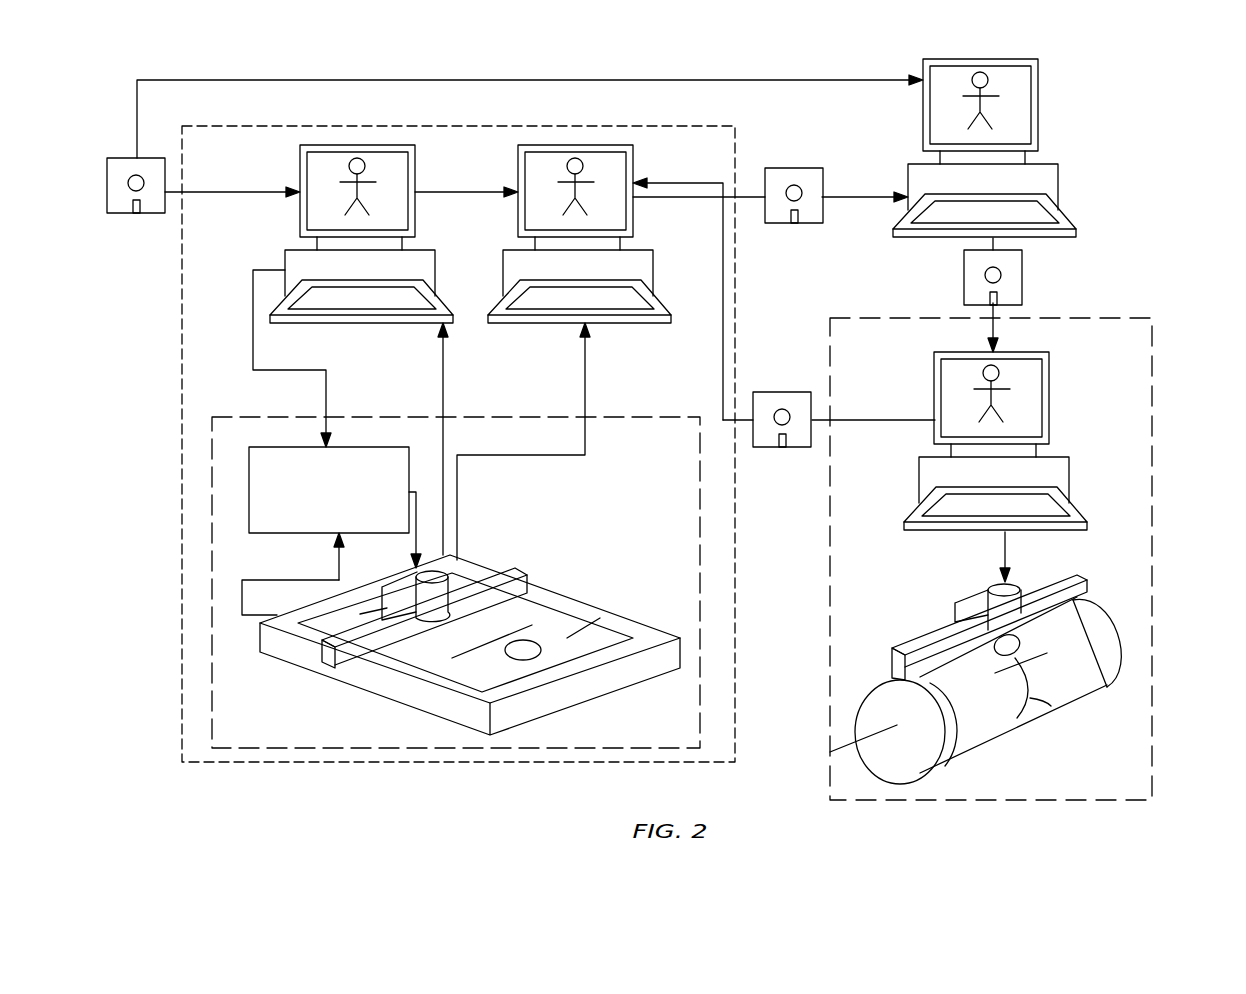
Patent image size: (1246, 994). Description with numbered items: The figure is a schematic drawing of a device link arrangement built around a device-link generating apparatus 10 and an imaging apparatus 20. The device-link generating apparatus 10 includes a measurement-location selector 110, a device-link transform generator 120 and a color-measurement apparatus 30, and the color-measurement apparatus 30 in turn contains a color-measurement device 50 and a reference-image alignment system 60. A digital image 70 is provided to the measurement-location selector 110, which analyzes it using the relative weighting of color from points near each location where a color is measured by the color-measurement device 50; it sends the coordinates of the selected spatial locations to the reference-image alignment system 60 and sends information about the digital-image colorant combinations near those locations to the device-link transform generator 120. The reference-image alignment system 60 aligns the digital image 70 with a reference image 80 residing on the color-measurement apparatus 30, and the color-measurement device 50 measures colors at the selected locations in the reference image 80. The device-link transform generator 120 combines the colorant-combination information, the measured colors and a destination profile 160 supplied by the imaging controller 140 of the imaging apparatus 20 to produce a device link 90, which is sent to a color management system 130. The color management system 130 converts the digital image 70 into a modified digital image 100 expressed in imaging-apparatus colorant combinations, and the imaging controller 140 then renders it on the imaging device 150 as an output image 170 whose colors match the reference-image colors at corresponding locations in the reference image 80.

The device-link generating apparatus 10 is at (700, 126).
The imaging apparatus 20 is at (1152, 548).
The color-measurement apparatus 30 is at (360, 750).
The color-measurement device 50 is at (413, 572).
The reference-image alignment system 60 is at (249, 485).
The digital image 70 is at (118, 213).
The reference image 80 is at (598, 618).
The device link 90 is at (800, 223).
The modified digital image 100 is at (1023, 275).
The measurement-location selector 110 is at (360, 145).
The device-link transform generator 120 is at (580, 145).
The color management system 130 is at (1038, 108).
The imaging controller 140 is at (1049, 400).
The imaging device 150 is at (855, 718).
The destination profile 160 is at (800, 445).
The output image 170 is at (1080, 658).